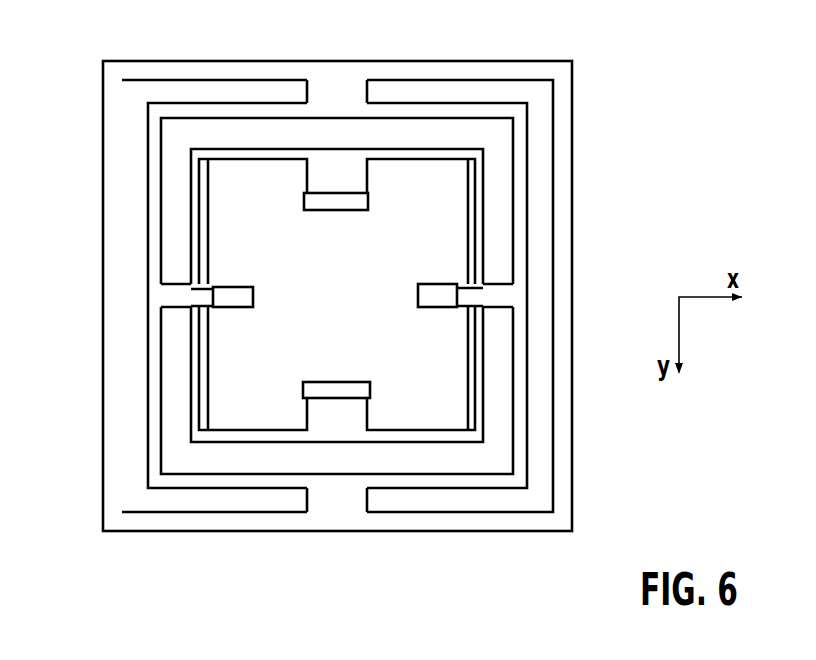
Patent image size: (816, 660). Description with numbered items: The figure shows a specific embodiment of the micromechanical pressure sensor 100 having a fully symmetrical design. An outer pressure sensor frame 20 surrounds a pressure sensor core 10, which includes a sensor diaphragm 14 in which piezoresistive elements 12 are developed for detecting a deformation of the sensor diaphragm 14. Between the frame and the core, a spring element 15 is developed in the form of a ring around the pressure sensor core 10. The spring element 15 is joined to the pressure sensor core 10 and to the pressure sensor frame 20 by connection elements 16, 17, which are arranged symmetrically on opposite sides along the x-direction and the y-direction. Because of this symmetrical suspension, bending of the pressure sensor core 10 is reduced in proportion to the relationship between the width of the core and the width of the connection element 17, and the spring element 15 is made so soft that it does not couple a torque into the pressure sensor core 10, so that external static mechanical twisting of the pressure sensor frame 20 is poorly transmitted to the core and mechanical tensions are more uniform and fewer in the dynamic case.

The pressure sensor core 10 is at (190, 212).
The piezoresistive elements 12 is at (303, 200).
The sensor diaphragm 14 is at (350, 309).
The spring element 15 is at (193, 102).
The connection element 16 is at (174, 283).
The connection element 17 is at (306, 93).
The pressure sensor frame 20 is at (573, 152).
The micromechanical pressure sensor 100 is at (111, 544).